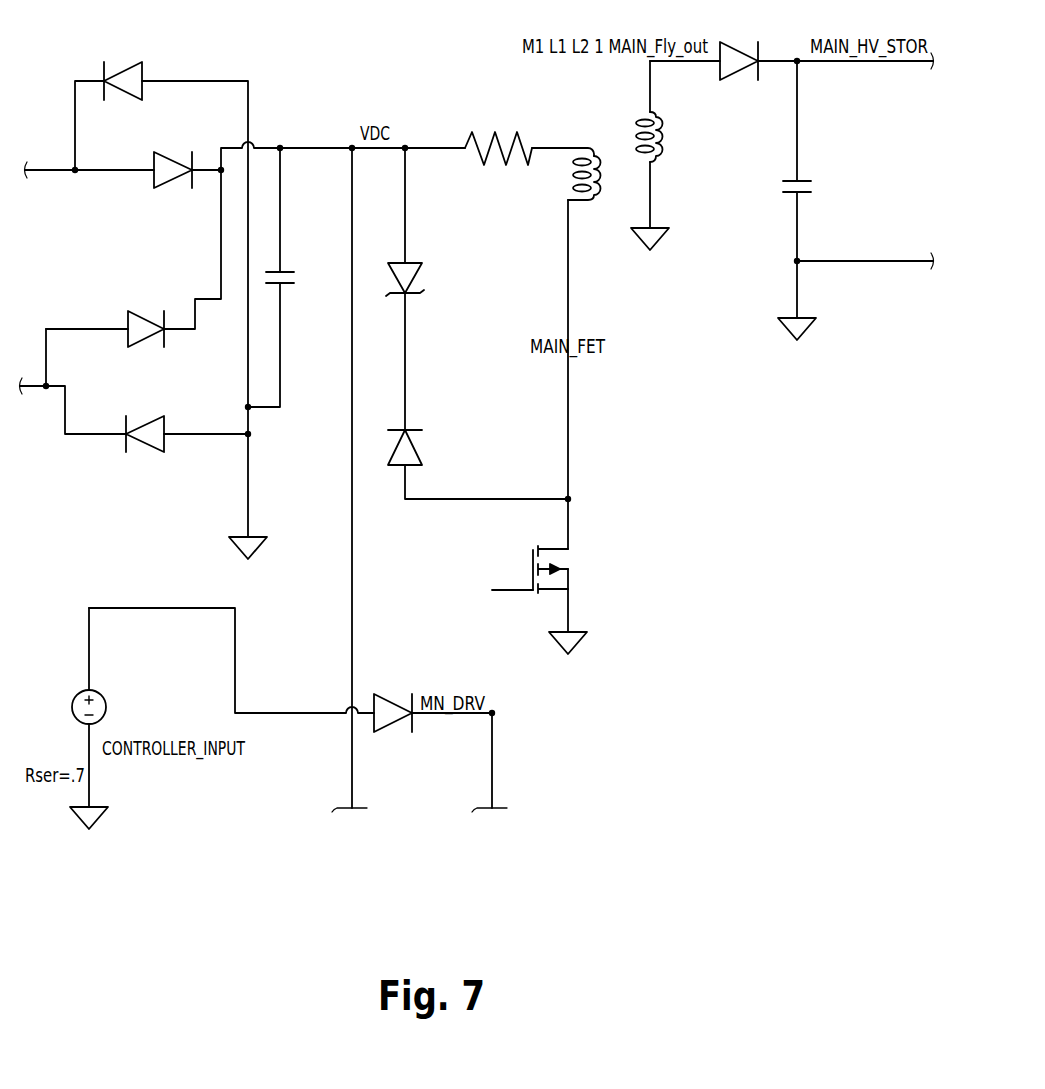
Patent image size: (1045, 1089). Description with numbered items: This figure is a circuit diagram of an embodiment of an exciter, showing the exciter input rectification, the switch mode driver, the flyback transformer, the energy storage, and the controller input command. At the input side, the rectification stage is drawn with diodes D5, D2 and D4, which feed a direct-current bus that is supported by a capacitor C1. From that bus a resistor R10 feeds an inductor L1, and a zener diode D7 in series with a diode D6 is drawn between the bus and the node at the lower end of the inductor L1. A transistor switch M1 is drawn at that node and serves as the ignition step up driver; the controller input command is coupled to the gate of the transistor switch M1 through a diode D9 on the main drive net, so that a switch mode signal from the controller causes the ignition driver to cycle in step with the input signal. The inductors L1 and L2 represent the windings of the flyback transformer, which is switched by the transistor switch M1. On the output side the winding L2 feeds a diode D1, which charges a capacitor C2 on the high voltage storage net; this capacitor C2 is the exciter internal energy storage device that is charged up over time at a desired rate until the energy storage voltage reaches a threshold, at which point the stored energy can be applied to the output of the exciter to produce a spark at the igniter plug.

The diode D5 is at (123, 80).
The diode D2 is at (160, 249).
The diode D4 is at (145, 433).
The capacitor C1 (100 uF) C1 is at (299, 275).
The zener diode D7 (1N53788) D7 is at (428, 278).
The diode D6 is at (407, 440).
The resistor R10 (.025) R10 is at (498, 150).
The inductor L1 (10e-6) L1 is at (580, 161).
The inductor L2 is at (669, 137).
The diode D1 is at (739, 59).
The capacitor C2 (1 uF) C2 is at (806, 187).
The MOSFET M1 (FDS2734) M1 is at (585, 568).
The diode D9 is at (393, 714).